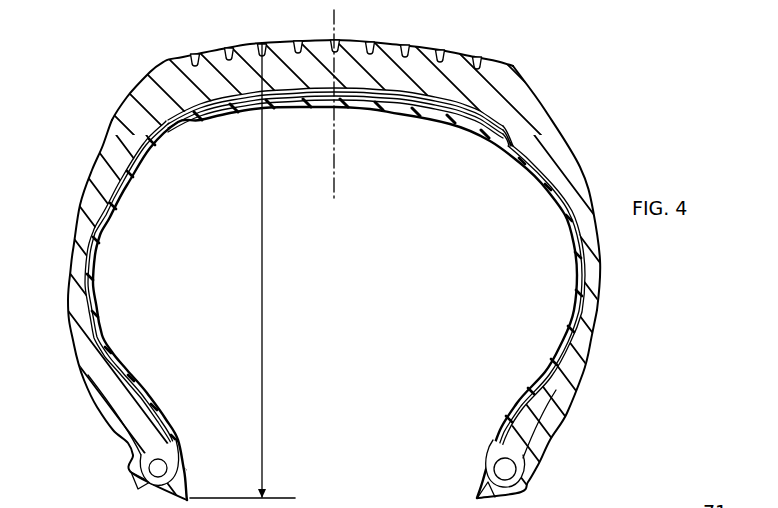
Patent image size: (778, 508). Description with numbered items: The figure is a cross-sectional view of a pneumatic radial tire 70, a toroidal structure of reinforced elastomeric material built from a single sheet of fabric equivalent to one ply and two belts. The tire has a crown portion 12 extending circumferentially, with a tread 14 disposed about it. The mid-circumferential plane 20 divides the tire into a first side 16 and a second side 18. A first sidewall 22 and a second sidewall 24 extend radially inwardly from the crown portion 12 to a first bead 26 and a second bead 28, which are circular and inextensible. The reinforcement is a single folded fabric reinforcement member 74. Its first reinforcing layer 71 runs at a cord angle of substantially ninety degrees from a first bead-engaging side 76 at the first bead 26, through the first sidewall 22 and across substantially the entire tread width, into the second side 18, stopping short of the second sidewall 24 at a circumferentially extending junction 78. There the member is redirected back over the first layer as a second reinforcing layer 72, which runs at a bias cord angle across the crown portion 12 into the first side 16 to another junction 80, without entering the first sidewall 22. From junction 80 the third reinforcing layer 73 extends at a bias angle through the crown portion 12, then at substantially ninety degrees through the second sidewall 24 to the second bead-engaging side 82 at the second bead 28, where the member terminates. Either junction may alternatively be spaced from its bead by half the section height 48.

The radial tire 70 is at (592, 80).
The crown portion 12 is at (458, 64).
The tread 14 is at (409, 43).
The first side 16 is at (601, 288).
The second side 18 is at (74, 222).
The mid-circumferential plane 20 is at (336, 177).
The first sidewall 22 is at (598, 332).
The second sidewall 24 is at (72, 340).
The first bead 26 is at (511, 472).
The second bead 28 is at (139, 488).
The section height 48 is at (264, 405).
The first reinforcing layer 71 is at (568, 230).
The second reinforcing layer 72 is at (284, 99).
The third reinforcing layer 73 is at (365, 93).
The reinforcement member 74 is at (245, 91).
The first bead-engaging side 76 is at (548, 423).
The junction 78 is at (176, 138).
The junction 80 is at (506, 130).
The second bead-engaging side 82 is at (132, 448).